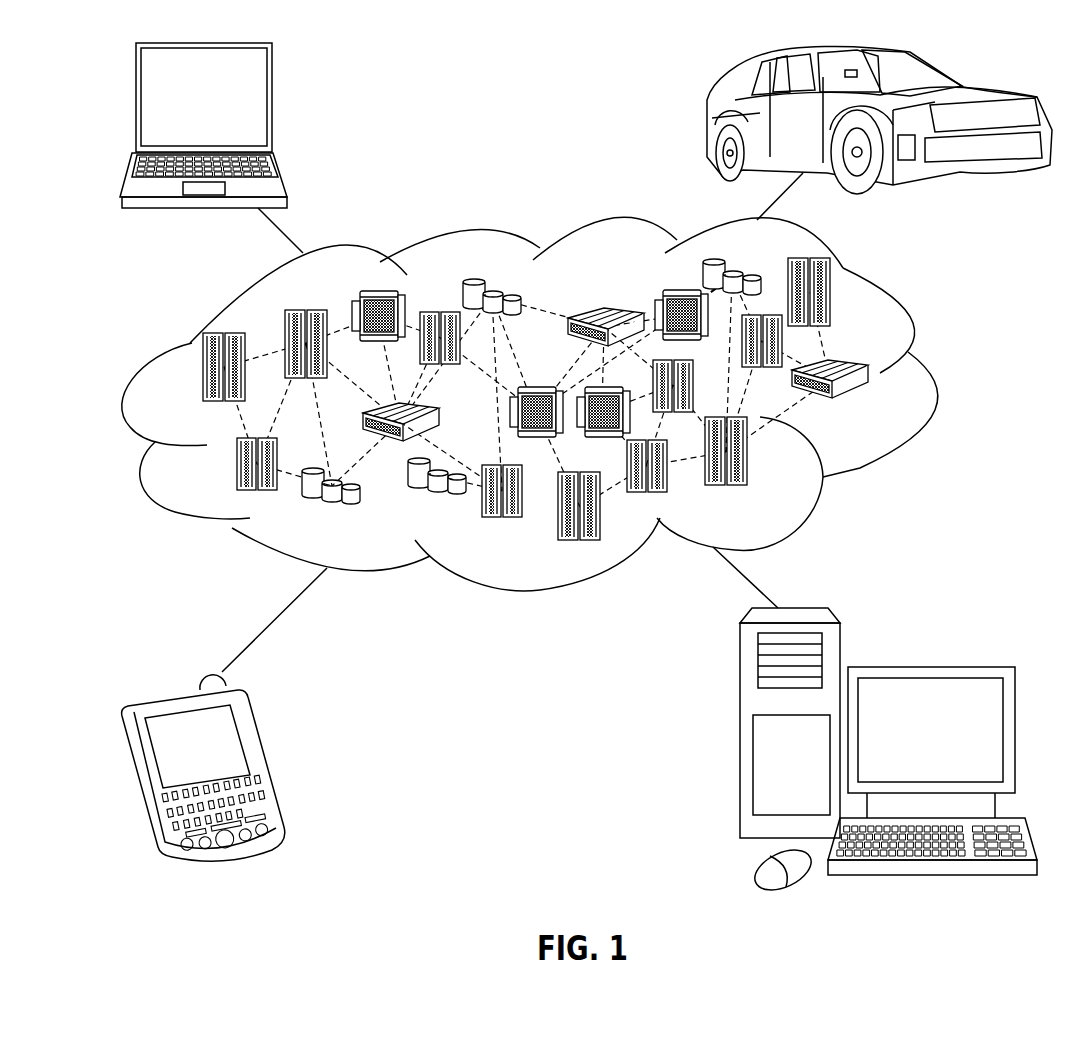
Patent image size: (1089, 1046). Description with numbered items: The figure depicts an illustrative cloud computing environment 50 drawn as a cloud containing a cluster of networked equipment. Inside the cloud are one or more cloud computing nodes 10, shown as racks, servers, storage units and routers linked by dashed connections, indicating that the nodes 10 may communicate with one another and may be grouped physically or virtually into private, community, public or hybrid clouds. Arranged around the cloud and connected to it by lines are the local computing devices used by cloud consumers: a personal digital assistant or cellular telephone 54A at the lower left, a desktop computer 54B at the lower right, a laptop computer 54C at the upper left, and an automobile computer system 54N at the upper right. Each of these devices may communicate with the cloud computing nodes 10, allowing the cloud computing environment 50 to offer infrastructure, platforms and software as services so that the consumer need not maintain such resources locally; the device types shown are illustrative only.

The cloud computing nodes 10 is at (872, 408).
The cloud computing environment 50 is at (928, 378).
The personal digital assistant or cellular telephone 54A is at (262, 762).
The desktop computer 54B is at (928, 666).
The laptop computer 54C is at (273, 105).
The automobile computer system 54N is at (710, 120).